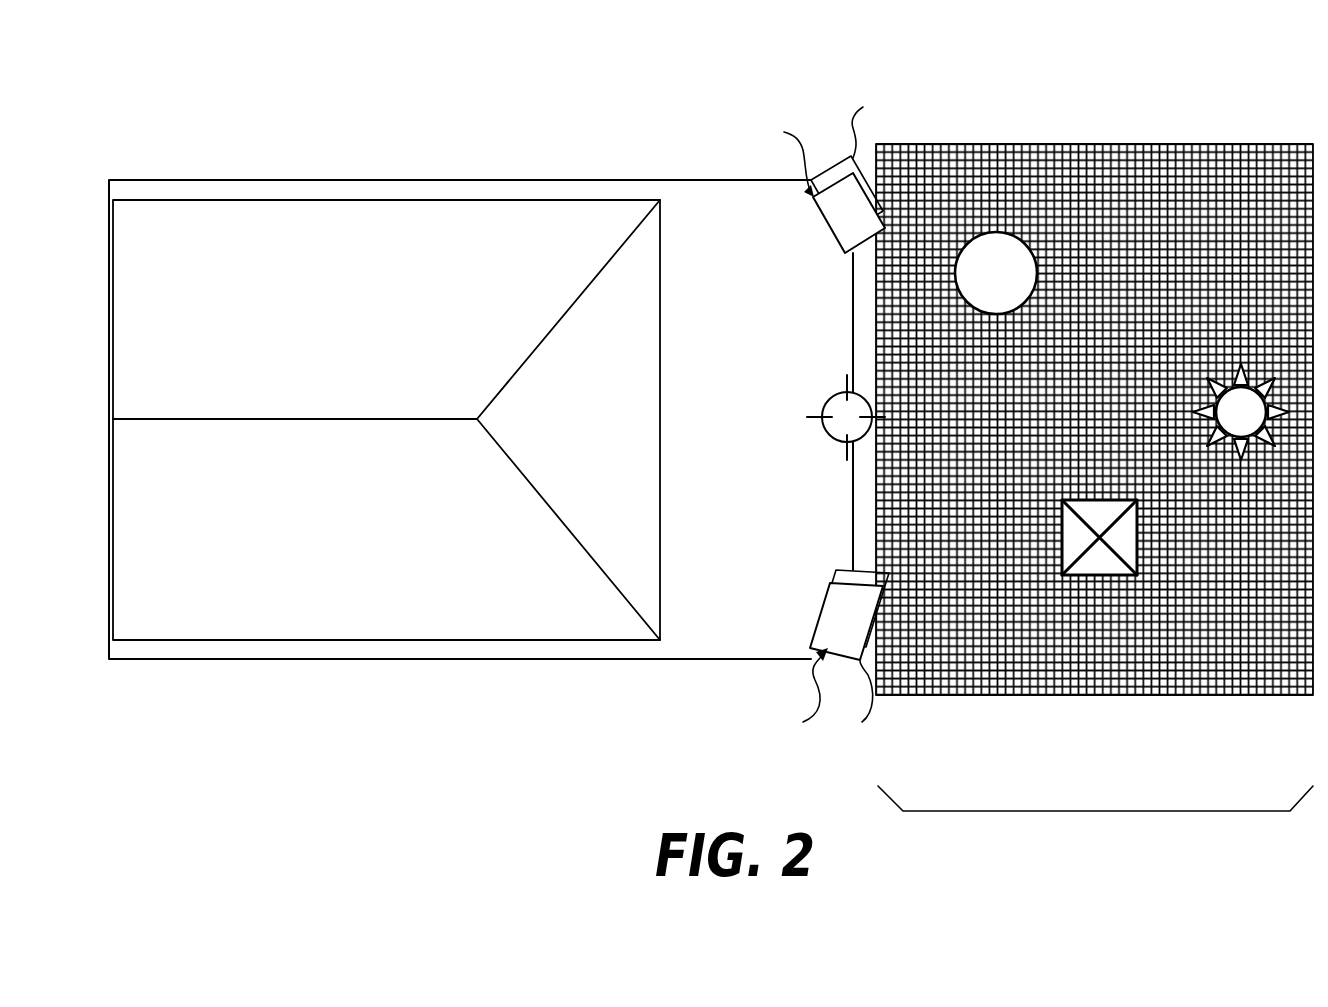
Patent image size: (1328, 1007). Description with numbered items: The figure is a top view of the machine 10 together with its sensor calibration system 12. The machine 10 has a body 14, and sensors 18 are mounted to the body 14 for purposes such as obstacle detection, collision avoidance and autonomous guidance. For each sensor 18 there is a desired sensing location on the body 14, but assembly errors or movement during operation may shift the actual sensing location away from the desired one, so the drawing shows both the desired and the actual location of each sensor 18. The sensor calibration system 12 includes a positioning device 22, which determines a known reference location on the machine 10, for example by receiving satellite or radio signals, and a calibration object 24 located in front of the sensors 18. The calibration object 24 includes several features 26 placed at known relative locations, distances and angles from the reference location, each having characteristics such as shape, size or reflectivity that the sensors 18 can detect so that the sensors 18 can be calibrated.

The machine 10 is at (297, 753).
The sensor calibration system 12 is at (1076, 82).
The body 14 is at (269, 567).
The sensor 18 is at (834, 146).
The positioning device 22 is at (833, 427).
The calibration object 24 is at (1097, 812).
The features 26 is at (992, 293).